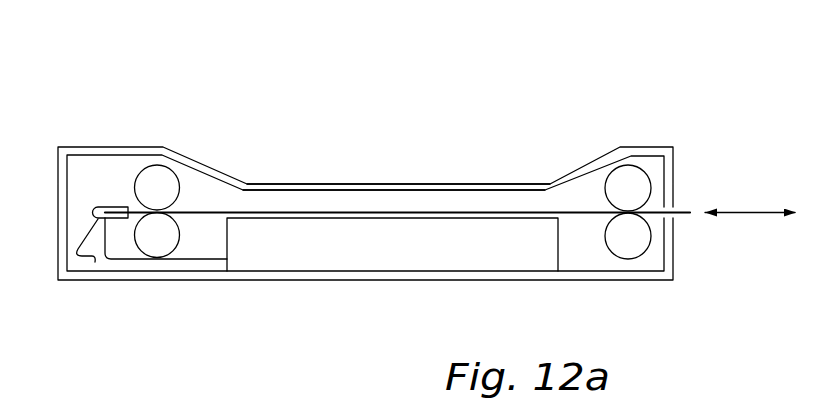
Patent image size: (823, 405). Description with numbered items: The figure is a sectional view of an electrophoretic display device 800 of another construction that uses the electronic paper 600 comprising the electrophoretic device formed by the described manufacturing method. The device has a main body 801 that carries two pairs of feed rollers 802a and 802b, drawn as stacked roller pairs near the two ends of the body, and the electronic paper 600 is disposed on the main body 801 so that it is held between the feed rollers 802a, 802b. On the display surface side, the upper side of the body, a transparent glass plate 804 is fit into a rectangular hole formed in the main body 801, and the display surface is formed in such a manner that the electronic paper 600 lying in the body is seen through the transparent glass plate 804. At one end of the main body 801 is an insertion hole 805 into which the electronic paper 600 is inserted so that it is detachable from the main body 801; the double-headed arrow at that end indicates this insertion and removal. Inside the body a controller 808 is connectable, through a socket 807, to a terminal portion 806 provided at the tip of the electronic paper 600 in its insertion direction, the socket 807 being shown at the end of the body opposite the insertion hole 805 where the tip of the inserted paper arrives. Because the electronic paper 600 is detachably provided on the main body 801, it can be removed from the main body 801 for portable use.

The electrophoretic display device 800 is at (667, 92).
The main body 801 is at (123, 152).
The feed rollers 802a is at (172, 168).
The feed rollers 802b is at (631, 155).
The transparent glass plate 804 is at (464, 186).
The insertion hole 805 is at (672, 212).
The terminal portion 806 is at (107, 212).
The socket 807 is at (95, 262).
The controller 808 is at (360, 260).
The electronic paper 600 is at (375, 211).